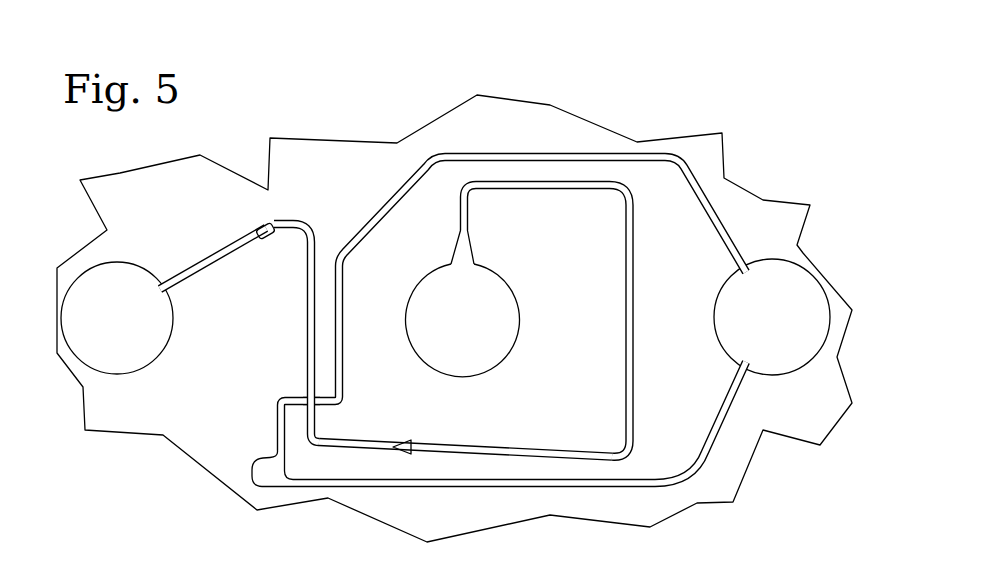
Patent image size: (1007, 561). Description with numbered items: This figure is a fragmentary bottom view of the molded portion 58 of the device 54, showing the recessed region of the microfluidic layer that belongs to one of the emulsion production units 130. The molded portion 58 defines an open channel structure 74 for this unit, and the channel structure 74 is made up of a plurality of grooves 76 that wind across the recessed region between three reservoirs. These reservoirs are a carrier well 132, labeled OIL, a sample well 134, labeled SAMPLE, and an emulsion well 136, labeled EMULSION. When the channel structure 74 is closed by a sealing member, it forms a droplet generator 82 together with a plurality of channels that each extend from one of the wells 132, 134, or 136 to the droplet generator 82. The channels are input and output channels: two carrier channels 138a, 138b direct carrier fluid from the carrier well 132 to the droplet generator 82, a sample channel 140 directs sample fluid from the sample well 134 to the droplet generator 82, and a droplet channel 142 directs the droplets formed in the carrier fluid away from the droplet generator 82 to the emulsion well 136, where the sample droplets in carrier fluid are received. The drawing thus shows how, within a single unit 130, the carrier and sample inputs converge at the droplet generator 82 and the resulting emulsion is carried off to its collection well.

The device 54 is at (757, 131).
The molded portion 58 is at (739, 165).
The emulsion production unit 130 is at (744, 206).
The channel structure 74 is at (222, 252).
The grooves 76 is at (244, 229).
The droplet generator 82 is at (327, 413).
The carrier well 132 is at (776, 373).
The sample well 134 is at (429, 277).
The emulsion well 136 is at (116, 375).
The carrier channel 138a is at (278, 431).
The carrier channel 138b is at (346, 364).
The sample channel 140 is at (366, 447).
The droplet channel 142 is at (306, 306).